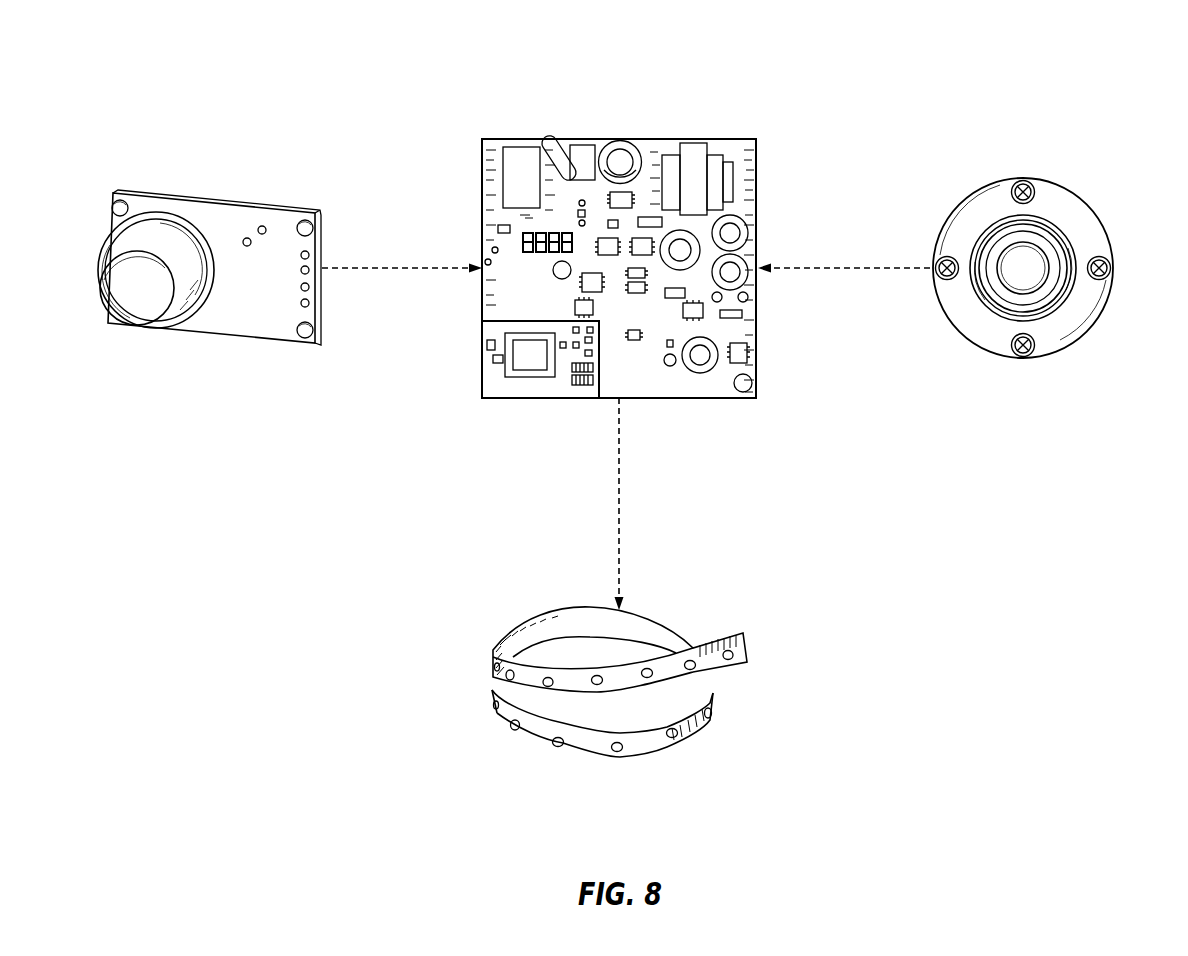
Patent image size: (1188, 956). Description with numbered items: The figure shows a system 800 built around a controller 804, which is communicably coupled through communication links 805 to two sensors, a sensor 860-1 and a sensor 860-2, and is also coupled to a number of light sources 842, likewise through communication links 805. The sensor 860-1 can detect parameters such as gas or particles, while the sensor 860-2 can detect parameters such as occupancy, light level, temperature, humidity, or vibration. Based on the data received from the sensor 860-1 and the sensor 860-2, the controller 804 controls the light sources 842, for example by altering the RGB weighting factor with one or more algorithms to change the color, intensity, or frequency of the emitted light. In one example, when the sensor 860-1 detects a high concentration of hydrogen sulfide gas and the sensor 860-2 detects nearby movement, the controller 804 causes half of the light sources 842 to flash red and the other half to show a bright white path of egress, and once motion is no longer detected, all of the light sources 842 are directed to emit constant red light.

The system 800 is at (994, 76).
The controller 804 is at (718, 138).
The communication links 805 is at (422, 272).
The light sources 842 is at (730, 662).
The sensor 860-1 is at (235, 337).
The sensor 860-2 is at (1047, 358).